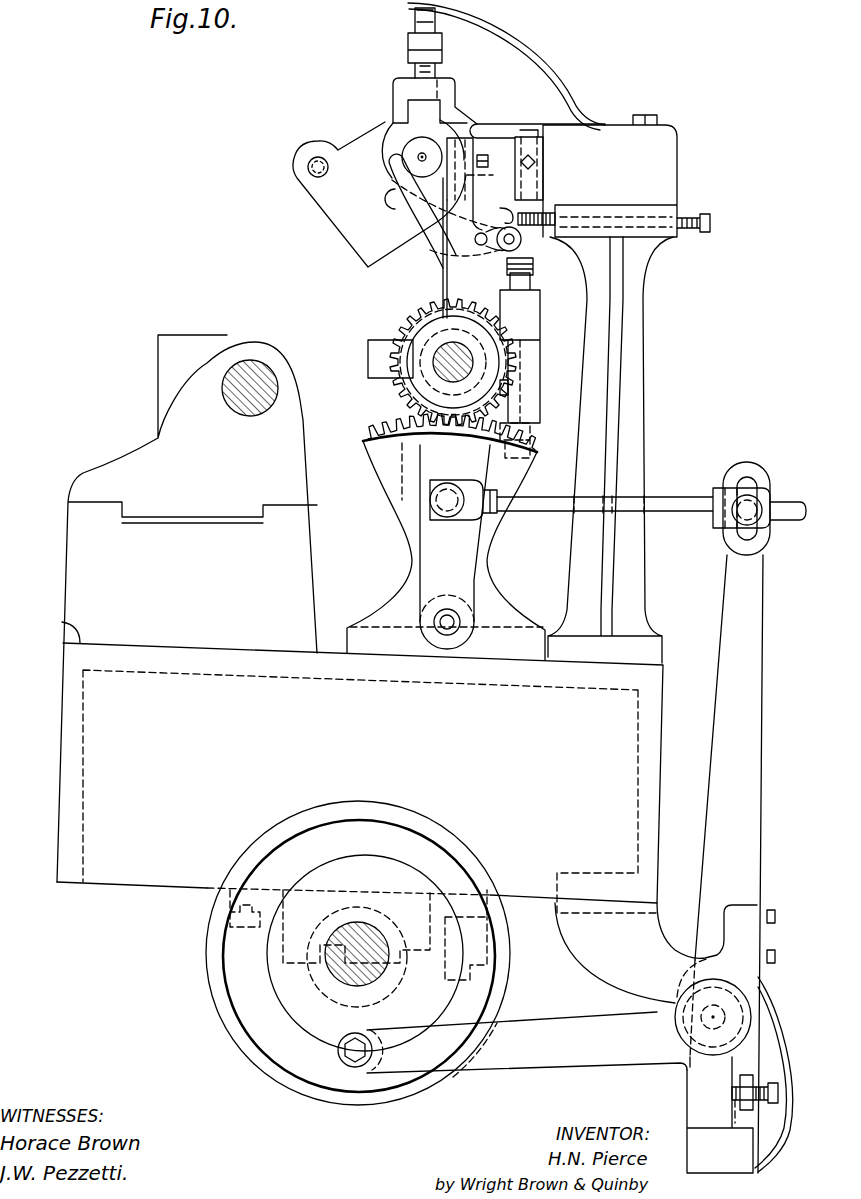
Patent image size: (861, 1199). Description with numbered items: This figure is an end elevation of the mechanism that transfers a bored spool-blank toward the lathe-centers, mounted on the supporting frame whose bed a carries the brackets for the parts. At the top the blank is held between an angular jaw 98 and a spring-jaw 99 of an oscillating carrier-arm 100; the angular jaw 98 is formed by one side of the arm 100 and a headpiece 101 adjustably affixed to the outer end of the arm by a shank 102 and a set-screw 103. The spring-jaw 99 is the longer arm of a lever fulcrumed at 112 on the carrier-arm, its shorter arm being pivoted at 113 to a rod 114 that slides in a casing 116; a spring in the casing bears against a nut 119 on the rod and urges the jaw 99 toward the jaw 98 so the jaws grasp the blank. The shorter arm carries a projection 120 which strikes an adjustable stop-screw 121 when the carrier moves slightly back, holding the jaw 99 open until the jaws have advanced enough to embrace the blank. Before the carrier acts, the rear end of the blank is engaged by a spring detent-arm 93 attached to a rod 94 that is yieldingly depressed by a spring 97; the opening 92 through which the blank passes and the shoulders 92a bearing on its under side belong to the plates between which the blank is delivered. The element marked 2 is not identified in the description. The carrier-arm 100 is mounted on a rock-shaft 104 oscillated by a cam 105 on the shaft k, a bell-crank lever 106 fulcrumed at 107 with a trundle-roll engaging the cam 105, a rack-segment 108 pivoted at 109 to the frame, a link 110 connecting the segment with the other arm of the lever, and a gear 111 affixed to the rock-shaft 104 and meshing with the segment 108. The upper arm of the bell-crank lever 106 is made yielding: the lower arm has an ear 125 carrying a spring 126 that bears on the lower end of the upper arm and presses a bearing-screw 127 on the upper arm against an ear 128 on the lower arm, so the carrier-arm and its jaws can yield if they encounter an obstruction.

The bed a is at (80, 622).
The roller 2 is at (410, 155).
The shaft k is at (327, 963).
The opening 92 is at (390, 157).
The shoulder 92a is at (392, 200).
The spring detent-arm 93 is at (420, 110).
The rod 94 is at (443, 50).
The spring 97 is at (498, 23).
The angular jaw 98 is at (453, 177).
The spring-jaw 99 is at (423, 220).
The carrier-arm 100 is at (445, 265).
The headpiece 101 is at (440, 170).
The shank 102 is at (498, 163).
The set-screw 103 is at (482, 157).
The rock-shaft 104 is at (437, 350).
The cam 105 is at (348, 835).
The bell-crank lever 106 is at (740, 810).
The fulcrum 107 is at (705, 1012).
The rack-segment 108 is at (497, 475).
The pivot 109 is at (450, 622).
The link 110 is at (549, 508).
The gear 111 is at (510, 388).
The fulcrum 112 is at (482, 247).
The pivot 113 is at (515, 243).
The rod 114 is at (527, 262).
The casing 116 is at (522, 320).
The nut 119 is at (531, 432).
The projection 120 is at (496, 227).
The stop-screw 121 is at (548, 212).
The ear 125 is at (737, 920).
The spring 126 is at (772, 1008).
The bearing-screw 127 is at (741, 1113).
The ear 128 is at (710, 1092).